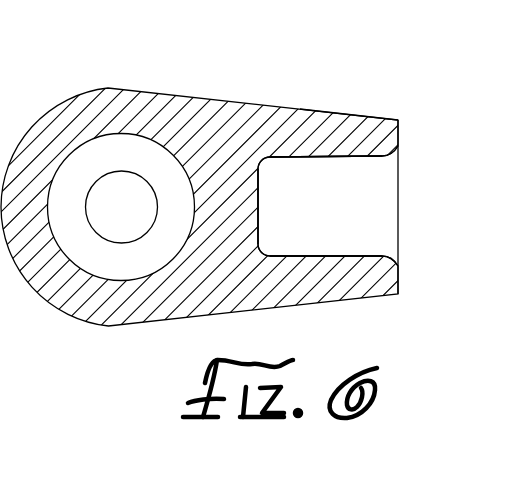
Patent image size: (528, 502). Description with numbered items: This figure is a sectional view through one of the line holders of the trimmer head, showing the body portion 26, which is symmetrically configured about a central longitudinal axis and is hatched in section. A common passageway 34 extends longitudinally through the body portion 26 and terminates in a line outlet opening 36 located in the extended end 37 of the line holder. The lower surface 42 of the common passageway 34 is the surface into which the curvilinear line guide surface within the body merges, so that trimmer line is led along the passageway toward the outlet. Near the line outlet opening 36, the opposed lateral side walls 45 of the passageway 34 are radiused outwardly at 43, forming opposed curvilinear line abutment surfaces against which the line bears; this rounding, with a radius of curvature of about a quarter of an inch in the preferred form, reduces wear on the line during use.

The body portion 26 is at (186, 108).
The common passageway 34 is at (320, 211).
The line outlet opening 36 is at (399, 168).
The extended end 37 is at (386, 120).
The lower surface 42 is at (354, 244).
The radiused portion 43 is at (399, 155).
The lateral side walls 45 is at (326, 156).